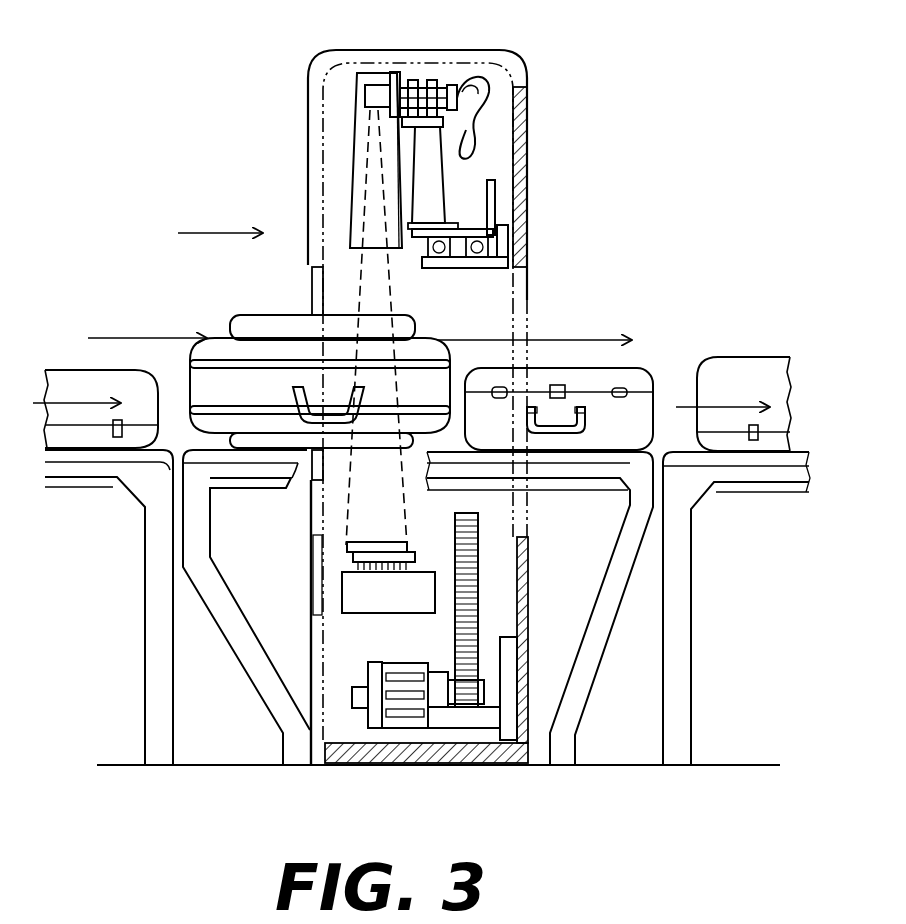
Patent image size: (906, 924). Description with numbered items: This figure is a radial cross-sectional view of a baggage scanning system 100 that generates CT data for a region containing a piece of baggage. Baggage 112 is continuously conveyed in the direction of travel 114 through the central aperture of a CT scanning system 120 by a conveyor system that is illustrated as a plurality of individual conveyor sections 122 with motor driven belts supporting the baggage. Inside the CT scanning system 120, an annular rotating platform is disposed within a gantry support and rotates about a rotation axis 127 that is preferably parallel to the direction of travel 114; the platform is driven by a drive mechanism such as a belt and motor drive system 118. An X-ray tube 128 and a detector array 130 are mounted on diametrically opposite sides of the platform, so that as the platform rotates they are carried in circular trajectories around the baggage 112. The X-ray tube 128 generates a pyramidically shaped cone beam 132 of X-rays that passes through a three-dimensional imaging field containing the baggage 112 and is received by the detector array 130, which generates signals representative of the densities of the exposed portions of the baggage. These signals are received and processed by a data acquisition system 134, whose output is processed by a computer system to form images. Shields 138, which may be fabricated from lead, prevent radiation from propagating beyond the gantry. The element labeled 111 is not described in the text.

The baggage scanning system 100 is at (686, 813).
The rack drive 111 is at (478, 598).
The baggage 112 is at (275, 313).
The direction of travel 114 is at (215, 233).
The motor drive system 118 is at (428, 728).
The CT scanning system 120 is at (378, 48).
The conveyor section 122 is at (695, 600).
The rotation axis 127 is at (137, 337).
The X-ray tube 128 is at (425, 87).
The detector array 130 is at (350, 542).
The cone beam 132 is at (393, 302).
The data acquisition system 134 is at (348, 618).
The shields 138 is at (347, 558).